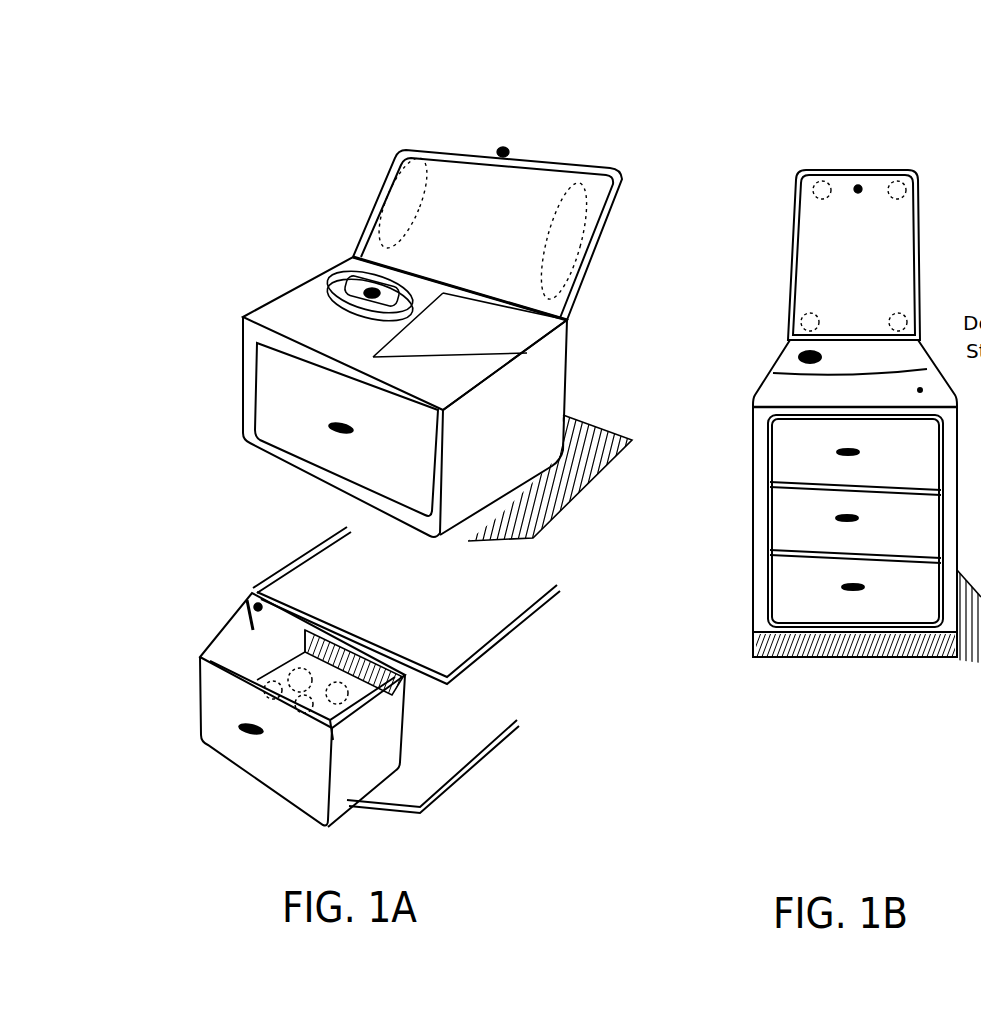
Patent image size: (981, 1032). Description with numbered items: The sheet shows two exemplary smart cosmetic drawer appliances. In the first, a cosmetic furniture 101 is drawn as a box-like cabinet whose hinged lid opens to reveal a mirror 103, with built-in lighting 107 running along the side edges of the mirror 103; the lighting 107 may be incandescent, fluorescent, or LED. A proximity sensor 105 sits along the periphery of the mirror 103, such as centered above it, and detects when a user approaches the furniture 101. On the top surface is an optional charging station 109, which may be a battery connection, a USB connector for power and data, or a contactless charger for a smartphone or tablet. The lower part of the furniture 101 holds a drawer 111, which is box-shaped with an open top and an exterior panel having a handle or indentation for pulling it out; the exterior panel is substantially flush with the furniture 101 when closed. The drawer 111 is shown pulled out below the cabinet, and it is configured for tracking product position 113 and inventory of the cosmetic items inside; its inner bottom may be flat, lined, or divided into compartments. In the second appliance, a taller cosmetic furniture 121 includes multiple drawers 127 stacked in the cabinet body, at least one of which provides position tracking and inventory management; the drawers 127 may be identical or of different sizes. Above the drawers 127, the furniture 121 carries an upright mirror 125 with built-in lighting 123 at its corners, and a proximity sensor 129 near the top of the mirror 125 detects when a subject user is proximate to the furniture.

In FIG. 1A, the cosmetic furniture 101 is at (517, 38).
In FIG. 1A, the mirror 103 is at (466, 203).
In FIG. 1A, the proximity sensor 105 is at (507, 144).
In FIG. 1A, the built-in lighting 107 is at (393, 207).
In FIG. 1A, the charging station 109 is at (328, 276).
In FIG. 1A, the drawer 111 is at (296, 385).
In FIG. 1A, the product position 113 is at (268, 656).
In FIG. 1B, the cosmetic furniture 121 is at (846, 38).
In FIG. 1B, the built-in lighting 123 is at (872, 172).
In FIG. 1B, the mirror 125 is at (833, 262).
In FIG. 1B, the drawers 127 is at (798, 520).
In FIG. 1B, the proximity sensor 129 is at (861, 199).